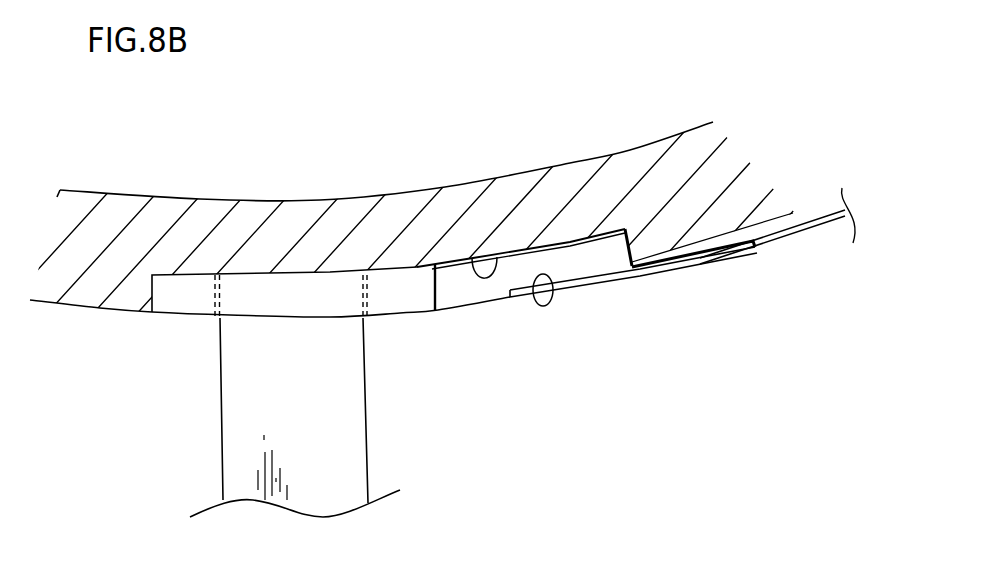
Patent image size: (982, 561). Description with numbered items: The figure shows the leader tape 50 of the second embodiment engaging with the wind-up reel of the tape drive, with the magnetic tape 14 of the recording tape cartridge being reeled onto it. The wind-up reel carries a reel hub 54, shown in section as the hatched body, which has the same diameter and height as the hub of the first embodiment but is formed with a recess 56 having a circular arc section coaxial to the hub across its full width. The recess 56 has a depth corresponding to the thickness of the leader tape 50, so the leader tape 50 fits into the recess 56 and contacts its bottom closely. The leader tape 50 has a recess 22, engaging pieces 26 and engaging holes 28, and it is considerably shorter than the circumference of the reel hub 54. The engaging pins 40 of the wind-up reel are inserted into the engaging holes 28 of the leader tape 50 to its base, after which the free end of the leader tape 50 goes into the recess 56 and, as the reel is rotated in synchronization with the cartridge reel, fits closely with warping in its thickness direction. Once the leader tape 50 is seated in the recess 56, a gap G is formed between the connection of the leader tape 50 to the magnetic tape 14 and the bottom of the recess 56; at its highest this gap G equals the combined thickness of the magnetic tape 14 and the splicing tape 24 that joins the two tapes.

The magnetic tape 14 is at (807, 222).
The recess 22 is at (562, 293).
The splicing tape 24 is at (585, 287).
The engaging pieces 26 is at (415, 298).
The engaging holes 28 is at (363, 292).
The engaging pins 40 is at (352, 432).
The leader tape 50 is at (480, 297).
The reel hub 54 is at (640, 160).
The recess 56 is at (472, 258).
The gap G is at (612, 228).